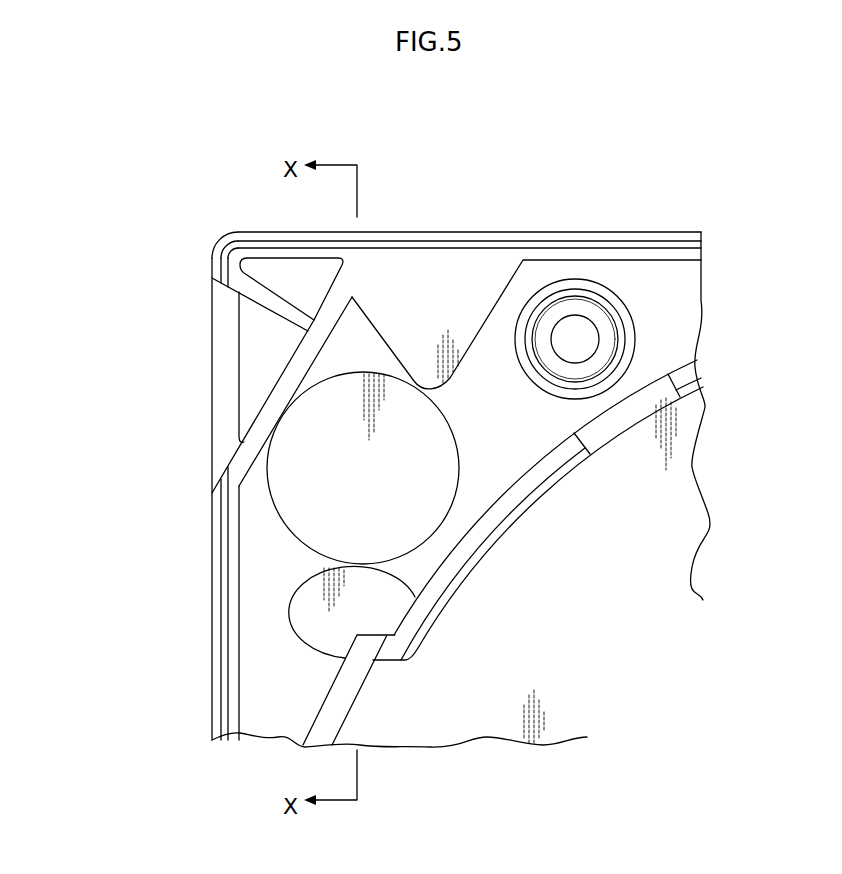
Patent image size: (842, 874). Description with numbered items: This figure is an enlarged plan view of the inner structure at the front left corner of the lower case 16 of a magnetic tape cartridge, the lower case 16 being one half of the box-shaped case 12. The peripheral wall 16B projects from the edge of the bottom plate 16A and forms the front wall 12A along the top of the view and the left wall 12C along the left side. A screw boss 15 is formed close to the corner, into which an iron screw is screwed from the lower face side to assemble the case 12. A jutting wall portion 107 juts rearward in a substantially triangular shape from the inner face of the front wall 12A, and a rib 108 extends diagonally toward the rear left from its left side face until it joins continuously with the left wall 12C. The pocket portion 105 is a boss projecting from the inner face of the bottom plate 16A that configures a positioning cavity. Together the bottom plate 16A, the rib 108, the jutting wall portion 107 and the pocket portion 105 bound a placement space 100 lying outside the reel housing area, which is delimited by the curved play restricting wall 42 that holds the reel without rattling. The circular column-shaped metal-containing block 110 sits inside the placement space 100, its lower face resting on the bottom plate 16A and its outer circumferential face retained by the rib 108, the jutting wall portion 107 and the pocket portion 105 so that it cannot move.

The lower case 16 is at (397, 456).
The case 12 is at (203, 216).
The peripheral wall 16B is at (397, 456).
The front wall 12A is at (481, 202).
The left wall 12C is at (212, 704).
The bottom plate 16A is at (488, 720).
The rib 108 is at (300, 363).
The jutting wall portion 107 is at (425, 340).
The metal-containing block 110 is at (266, 492).
The pocket portion 105 is at (312, 620).
The play restricting wall 42 is at (617, 436).
The screw boss 15 is at (576, 279).
The placement space 100 is at (480, 490).